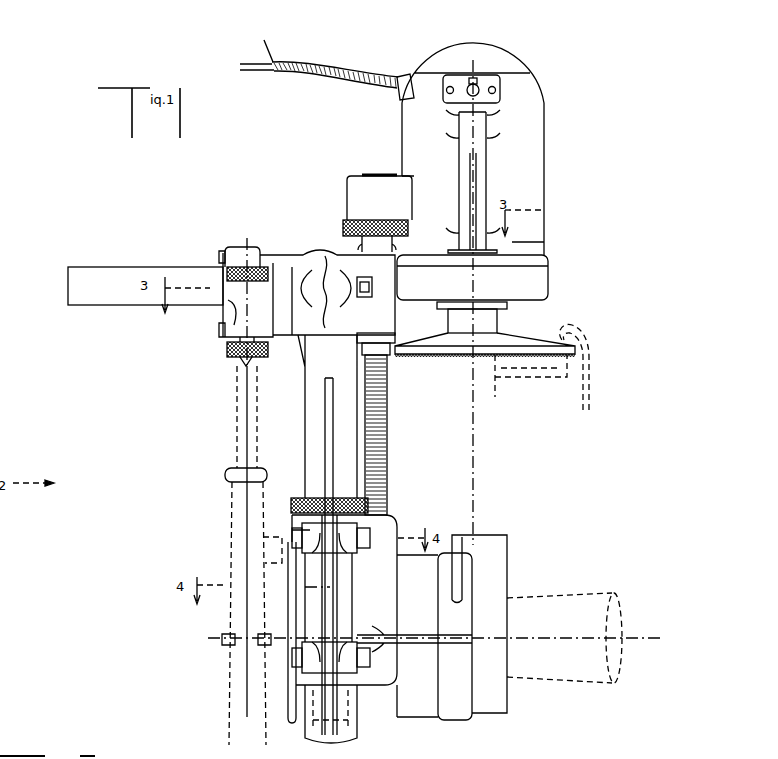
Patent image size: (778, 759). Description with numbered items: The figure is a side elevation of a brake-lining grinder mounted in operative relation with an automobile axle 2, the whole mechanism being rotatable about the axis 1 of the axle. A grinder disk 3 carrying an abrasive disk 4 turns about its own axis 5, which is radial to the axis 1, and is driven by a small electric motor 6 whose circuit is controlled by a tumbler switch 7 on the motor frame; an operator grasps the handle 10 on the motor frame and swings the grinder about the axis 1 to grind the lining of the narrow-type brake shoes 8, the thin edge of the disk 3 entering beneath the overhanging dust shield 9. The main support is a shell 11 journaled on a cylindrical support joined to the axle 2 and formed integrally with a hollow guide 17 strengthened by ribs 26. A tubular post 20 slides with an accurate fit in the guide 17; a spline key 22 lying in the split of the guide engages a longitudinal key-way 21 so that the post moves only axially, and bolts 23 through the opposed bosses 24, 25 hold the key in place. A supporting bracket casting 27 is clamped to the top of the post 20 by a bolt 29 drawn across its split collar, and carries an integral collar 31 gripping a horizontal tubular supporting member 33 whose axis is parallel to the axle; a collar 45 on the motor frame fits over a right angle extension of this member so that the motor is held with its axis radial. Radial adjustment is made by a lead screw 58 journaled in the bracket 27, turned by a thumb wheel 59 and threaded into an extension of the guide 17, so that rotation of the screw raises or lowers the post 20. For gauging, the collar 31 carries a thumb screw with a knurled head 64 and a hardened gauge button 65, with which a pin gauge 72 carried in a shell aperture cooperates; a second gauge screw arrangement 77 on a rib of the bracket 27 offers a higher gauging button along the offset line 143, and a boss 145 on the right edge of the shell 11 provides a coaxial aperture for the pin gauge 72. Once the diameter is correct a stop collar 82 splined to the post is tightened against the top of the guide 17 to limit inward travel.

The axis 1 is at (604, 642).
The automobile axle 2 is at (568, 603).
The grinder disk 3 is at (503, 350).
The abrasive disk 4 is at (470, 358).
The axis 5 is at (475, 184).
The electric motor 6 is at (530, 105).
The tumbler switch 7 is at (478, 82).
The brake shoes 8 is at (543, 375).
The dust shield 9 is at (587, 350).
The handle 10 is at (468, 153).
The shell 11 is at (418, 705).
The hollow guide 17 is at (387, 535).
The tubular post 20 is at (315, 408).
The key-way 21 is at (327, 435).
The spline key 22 is at (335, 613).
The bolts 23 is at (292, 662).
The boss 24 is at (313, 545).
The boss 25 is at (350, 550).
The strengthening ribs 26 is at (425, 638).
The supporting bracket casting 27 is at (343, 252).
The bolt 29 is at (373, 288).
The collar 31 is at (227, 305).
The horizontal tubular supporting member 33 is at (118, 277).
The collar 45 is at (358, 193).
The lead screw 58 is at (383, 452).
The thumb wheel 59 is at (372, 222).
The knurled head 64 is at (228, 352).
The gauge button 65 is at (242, 358).
The pin gauge 72 is at (237, 503).
The gauge screw arrangement 77 is at (263, 265).
The stop collar 82 is at (293, 502).
The line 143 is at (247, 427).
The boss 145 is at (485, 535).